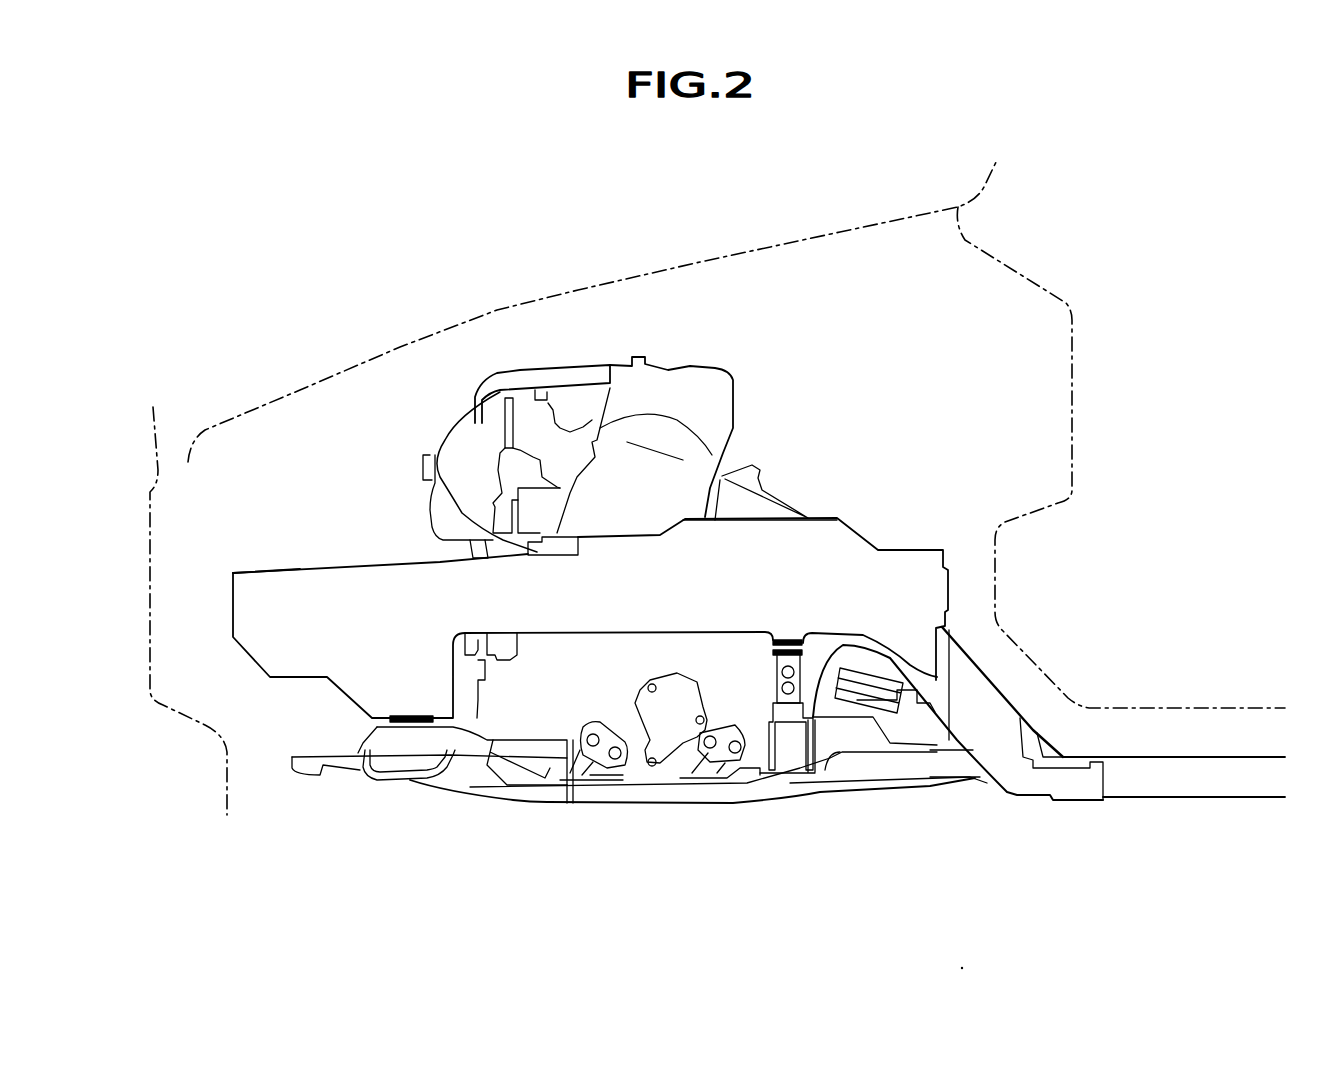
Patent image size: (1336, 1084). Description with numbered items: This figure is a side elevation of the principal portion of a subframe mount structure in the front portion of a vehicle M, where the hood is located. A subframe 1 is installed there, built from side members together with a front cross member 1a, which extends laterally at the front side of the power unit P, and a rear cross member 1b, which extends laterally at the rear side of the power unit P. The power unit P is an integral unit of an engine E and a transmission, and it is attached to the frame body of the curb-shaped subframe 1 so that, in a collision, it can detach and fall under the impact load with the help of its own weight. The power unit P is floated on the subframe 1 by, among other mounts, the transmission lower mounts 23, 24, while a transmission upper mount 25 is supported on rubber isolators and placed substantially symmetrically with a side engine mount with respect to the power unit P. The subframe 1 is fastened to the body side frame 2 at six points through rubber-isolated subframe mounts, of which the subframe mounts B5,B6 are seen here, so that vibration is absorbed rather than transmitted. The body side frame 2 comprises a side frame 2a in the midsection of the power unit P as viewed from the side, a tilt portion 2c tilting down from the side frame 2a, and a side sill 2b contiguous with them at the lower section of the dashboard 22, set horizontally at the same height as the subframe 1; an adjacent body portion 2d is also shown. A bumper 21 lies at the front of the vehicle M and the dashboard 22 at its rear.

The vehicle M is at (498, 312).
The engine E is at (630, 398).
The power unit P is at (658, 378).
The bumper 21 is at (179, 595).
The dashboard 22 is at (1073, 388).
The transmission upper mount 25 is at (540, 551).
The body side frame 2 is at (352, 570).
The side frame 2a is at (293, 574).
The side sill 2b is at (1170, 783).
The tilt portion 2c is at (934, 685).
The floor panel 2d is at (1225, 783).
The subframe 1 is at (665, 793).
The front cross member 1a is at (408, 740).
The rear cross member 1b is at (907, 723).
The transmission lower mount 23 is at (576, 800).
The transmission lower mount 24 is at (723, 773).
The subframe mounts B5,B6 is at (808, 662).